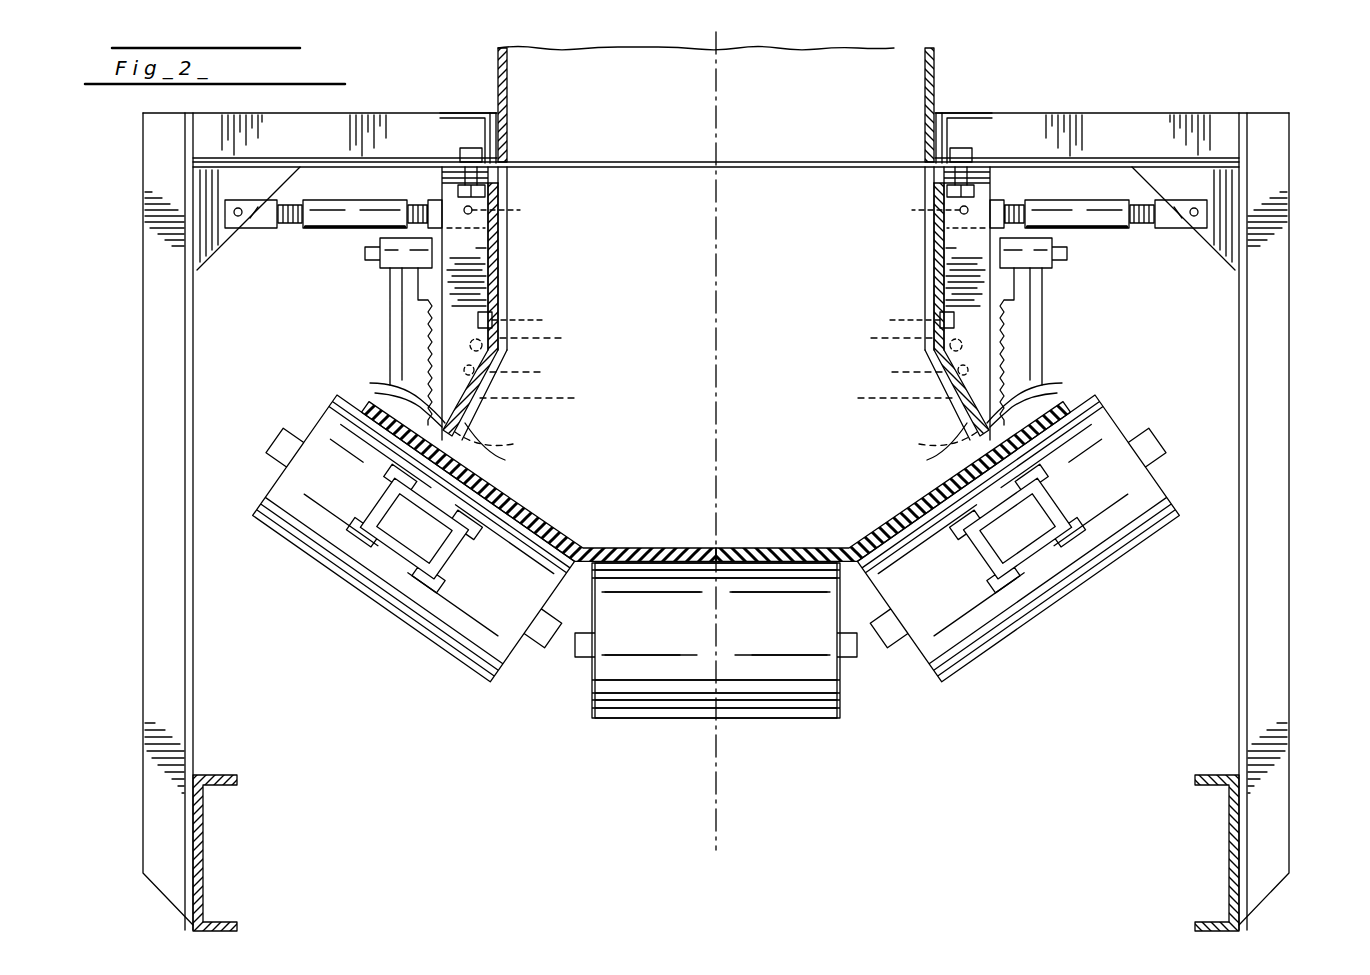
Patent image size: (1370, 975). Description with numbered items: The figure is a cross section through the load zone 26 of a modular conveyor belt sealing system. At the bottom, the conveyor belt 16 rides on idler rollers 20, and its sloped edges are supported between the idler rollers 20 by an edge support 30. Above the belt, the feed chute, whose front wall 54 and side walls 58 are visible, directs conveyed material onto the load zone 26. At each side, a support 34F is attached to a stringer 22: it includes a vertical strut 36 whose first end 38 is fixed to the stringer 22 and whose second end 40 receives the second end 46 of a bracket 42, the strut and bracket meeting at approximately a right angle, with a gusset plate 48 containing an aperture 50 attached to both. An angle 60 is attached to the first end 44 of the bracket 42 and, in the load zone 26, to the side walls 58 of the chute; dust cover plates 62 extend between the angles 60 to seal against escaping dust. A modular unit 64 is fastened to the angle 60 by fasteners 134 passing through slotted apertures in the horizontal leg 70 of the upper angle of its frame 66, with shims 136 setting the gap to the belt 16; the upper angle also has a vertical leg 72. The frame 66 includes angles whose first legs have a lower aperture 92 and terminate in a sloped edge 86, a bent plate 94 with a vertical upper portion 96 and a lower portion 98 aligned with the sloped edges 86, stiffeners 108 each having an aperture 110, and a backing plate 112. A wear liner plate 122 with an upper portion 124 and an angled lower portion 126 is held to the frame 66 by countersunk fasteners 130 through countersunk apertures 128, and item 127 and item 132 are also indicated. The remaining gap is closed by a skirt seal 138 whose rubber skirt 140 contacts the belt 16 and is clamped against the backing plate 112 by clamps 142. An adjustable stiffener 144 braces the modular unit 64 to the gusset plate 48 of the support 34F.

The conveyor belt 16 is at (738, 548).
The idler rollers 20 is at (362, 602).
The stringers 22 is at (206, 857).
The load zone 26 is at (722, 355).
The edge support 30 is at (437, 514).
The support 34F is at (209, 675).
The vertical strut 36 is at (143, 352).
The first end of vertical strut 38 is at (143, 827).
The second end of vertical strut 40 is at (143, 150).
The bracket 42 is at (310, 111).
The first end of bracket 44 is at (479, 113).
The second end of bracket 46 is at (213, 110).
The gusset plate 48 is at (205, 272).
The aperture 50 is at (240, 216).
The front wall 54 is at (597, 51).
The side walls 58 is at (506, 68).
The angle 60 is at (470, 125).
The dust cover plates 62 is at (605, 162).
The modular unit 64 is at (505, 346).
The frame 66 is at (385, 238).
The horizontal leg 70 is at (442, 195).
The vertical leg 72 is at (507, 233).
The sloped edge 86 is at (1028, 368).
The lower aperture 92 is at (495, 376).
The bent plate 94 is at (470, 400).
The upper portion of bent plate 96 is at (511, 352).
The lower portion of bent plate 98 is at (505, 469).
The stiffener 108 is at (480, 250).
The aperture 110 is at (500, 195).
The backing plate 112 is at (403, 315).
The wear liner plate 122 is at (512, 296).
The upper portion of wear liner 124 is at (504, 279).
The lower portion of wear liner 126 is at (460, 410).
The washer 127 is at (935, 295).
The countersunk apertures 128 is at (488, 320).
The countersunk fasteners 130 is at (938, 405).
The rack teeth 132 is at (430, 351).
The fasteners 134 is at (463, 148).
The shims 136 is at (485, 190).
The conveyor belt skirt seal 138 is at (395, 301).
The rubber skirt 140 is at (370, 378).
The clamps 142 is at (388, 280).
The adjustable stiffener 144 is at (352, 198).